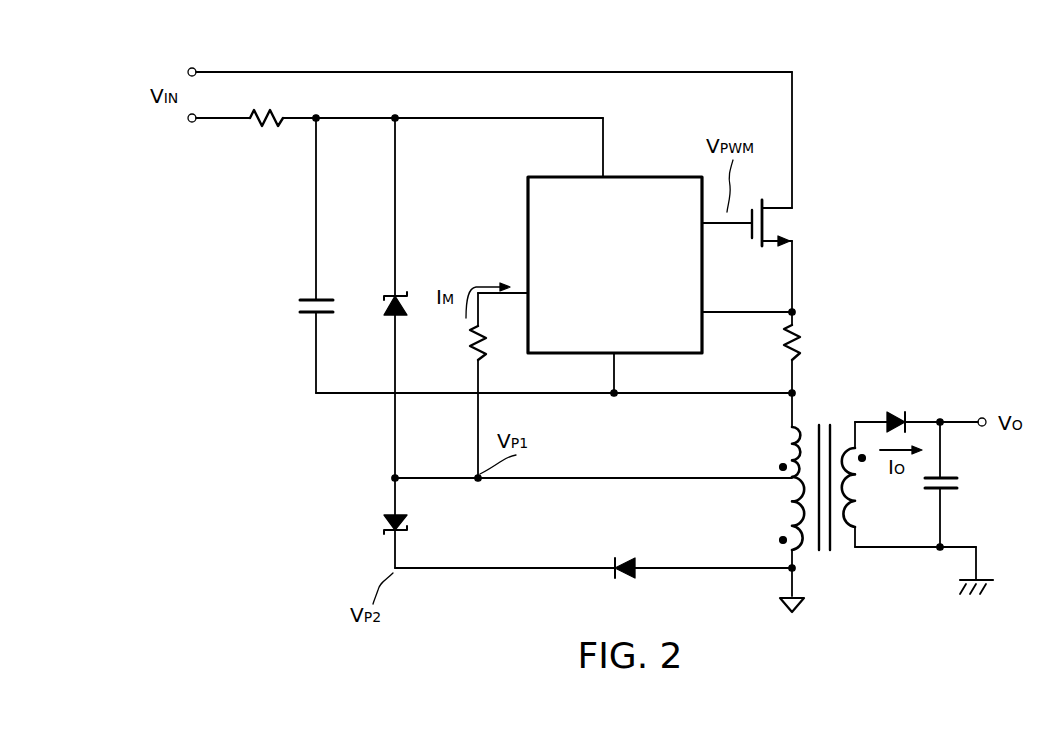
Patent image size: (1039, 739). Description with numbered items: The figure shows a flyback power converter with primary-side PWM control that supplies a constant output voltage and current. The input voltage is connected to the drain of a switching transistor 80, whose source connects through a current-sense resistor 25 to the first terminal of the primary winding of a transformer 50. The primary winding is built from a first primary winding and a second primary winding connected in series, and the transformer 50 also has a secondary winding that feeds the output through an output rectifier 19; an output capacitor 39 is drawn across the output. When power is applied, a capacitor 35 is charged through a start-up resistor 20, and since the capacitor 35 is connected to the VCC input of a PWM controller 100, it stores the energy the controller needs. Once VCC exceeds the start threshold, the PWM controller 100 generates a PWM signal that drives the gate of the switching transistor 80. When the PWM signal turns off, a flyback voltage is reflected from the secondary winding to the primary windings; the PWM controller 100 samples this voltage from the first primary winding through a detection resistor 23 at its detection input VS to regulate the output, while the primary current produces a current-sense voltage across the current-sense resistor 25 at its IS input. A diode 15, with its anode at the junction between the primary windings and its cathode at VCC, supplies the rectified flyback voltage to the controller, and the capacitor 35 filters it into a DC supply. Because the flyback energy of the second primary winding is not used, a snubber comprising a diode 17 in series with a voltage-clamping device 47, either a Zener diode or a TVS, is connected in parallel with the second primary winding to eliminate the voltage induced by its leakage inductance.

The start-up resistor 20 is at (265, 111).
The capacitor 35 is at (300, 304).
The diode 15 is at (390, 292).
The detection resistor 23 is at (470, 346).
The current-sense resistor 25 is at (786, 348).
The PWM controller 100 is at (643, 177).
The switching transistor 80 is at (798, 243).
The transformer 50 is at (826, 414).
The output rectifier 19 is at (898, 412).
The output capacitor 39 is at (960, 484).
The voltage-clamping device 47 is at (382, 528).
The diode 17 is at (614, 554).